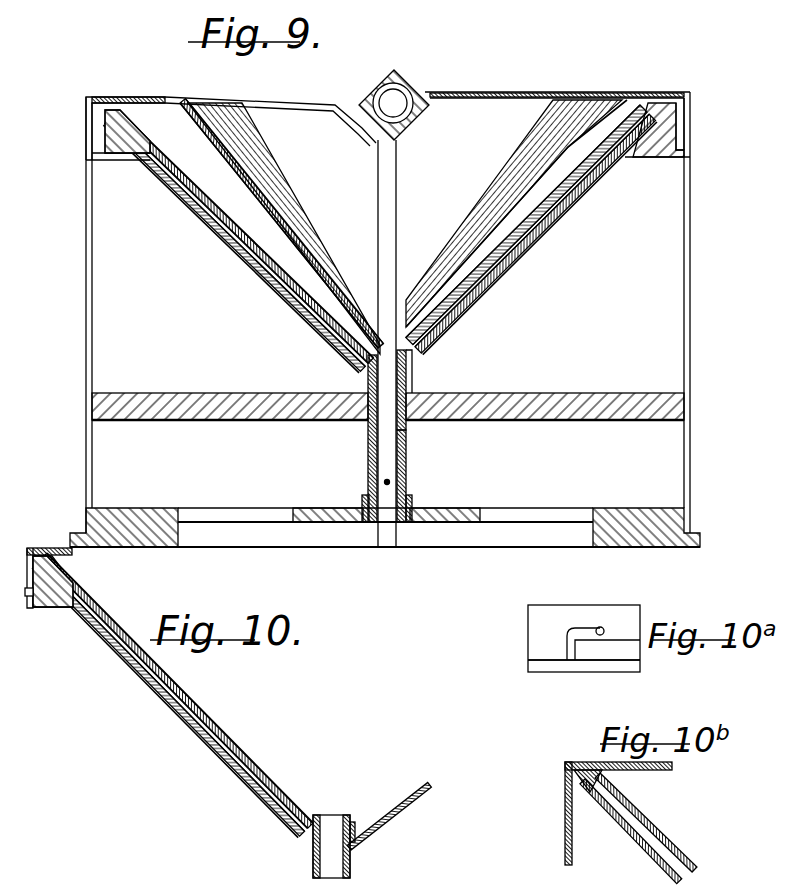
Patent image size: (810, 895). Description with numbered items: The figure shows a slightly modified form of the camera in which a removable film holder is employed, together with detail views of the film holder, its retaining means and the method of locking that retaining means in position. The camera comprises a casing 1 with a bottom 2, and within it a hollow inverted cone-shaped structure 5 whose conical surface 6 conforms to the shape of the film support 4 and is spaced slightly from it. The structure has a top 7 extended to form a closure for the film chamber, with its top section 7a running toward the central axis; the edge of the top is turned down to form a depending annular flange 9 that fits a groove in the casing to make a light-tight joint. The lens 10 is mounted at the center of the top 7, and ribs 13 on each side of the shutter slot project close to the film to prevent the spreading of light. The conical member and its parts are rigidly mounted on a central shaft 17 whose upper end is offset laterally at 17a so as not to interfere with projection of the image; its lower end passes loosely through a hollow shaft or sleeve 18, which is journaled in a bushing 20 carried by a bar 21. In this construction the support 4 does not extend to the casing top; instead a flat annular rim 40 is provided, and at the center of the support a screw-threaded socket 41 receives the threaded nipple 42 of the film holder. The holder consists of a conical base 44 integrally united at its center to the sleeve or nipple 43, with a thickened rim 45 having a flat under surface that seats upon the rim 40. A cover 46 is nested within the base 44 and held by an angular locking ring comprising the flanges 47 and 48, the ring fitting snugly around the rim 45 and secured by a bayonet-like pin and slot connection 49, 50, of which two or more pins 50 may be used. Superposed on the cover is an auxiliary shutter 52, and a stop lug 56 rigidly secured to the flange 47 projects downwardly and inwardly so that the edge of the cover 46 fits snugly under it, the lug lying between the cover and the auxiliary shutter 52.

In FIG. 9, the casing 1 is at (86, 280).
In FIG. 9, the bottom 2 is at (670, 548).
In FIG. 9, the film support 4 is at (492, 302).
In FIG. 9, the cone-shaped structure 5 is at (461, 165).
In FIG. 9, the conical surface 6 is at (258, 200).
In FIG. 9, the top 7 is at (497, 92).
In FIG. 9, the cover section 7a is at (300, 102).
In FIG. 9, the depending annular flange 9 is at (691, 130).
In FIG. 9, the lens 10 is at (376, 92).
In FIG. 9, the ribs 13 is at (463, 242).
In FIG. 9, the central shaft 17 is at (392, 288).
In FIG. 9, the offset upper end of shaft 17a is at (378, 181).
In FIG. 9, the hollow shaft or sleeve 18 is at (406, 473).
In FIG. 9, the bushing 20 is at (408, 421).
In FIG. 9, the bar 21 is at (248, 421).
In FIG. 9, the flat annular rim 40 is at (660, 157).
In FIG. 9, the screw-threaded thimble or socket 41 is at (408, 392).
In FIG. 9, the screw-threaded nipple portion 42 is at (368, 424).
In FIG. 10, the screw-threaded nipple portion 42 is at (313, 867).
In FIG. 10, the sleeve or nipple 43 is at (320, 832).
In FIG. 9, the conical base 44 is at (280, 283).
In FIG. 10, the conical base 44 is at (193, 731).
In FIG. 9, the thickened rim 45 is at (126, 153).
In FIG. 10, the thickened rim 45 is at (50, 607).
In FIG. 10A, the thickened rim 45 is at (556, 668).
In FIG. 9, the cover 46 is at (238, 258).
In FIG. 10, the cover 46 is at (157, 693).
In FIG. 10B, the cover 46 is at (670, 872).
In FIG. 9, the flange of locking ring 47 is at (138, 97).
In FIG. 10, the flange of locking ring 47 is at (57, 548).
In FIG. 10B, the flange of locking ring 47 is at (658, 772).
In FIG. 9, the flange of locking ring 48 is at (86, 148).
In FIG. 10, the flange of locking ring 48 is at (27, 565).
In FIG. 10A, the flange of locking ring 48 is at (557, 610).
In FIG. 10B, the flange of locking ring 48 is at (565, 848).
In FIG. 10A, the slot 49 is at (570, 646).
In FIG. 10, the pin 50 is at (25, 592).
In FIG. 10A, the pin 50 is at (603, 628).
In FIG. 9, the auxiliary shutter 52 is at (574, 226).
In FIG. 10, the auxiliary shutter 52 is at (203, 712).
In FIG. 10B, the auxiliary shutter 52 is at (683, 843).
In FIG. 10, the stop lug 56 is at (42, 553).
In FIG. 10B, the stop lug 56 is at (594, 795).